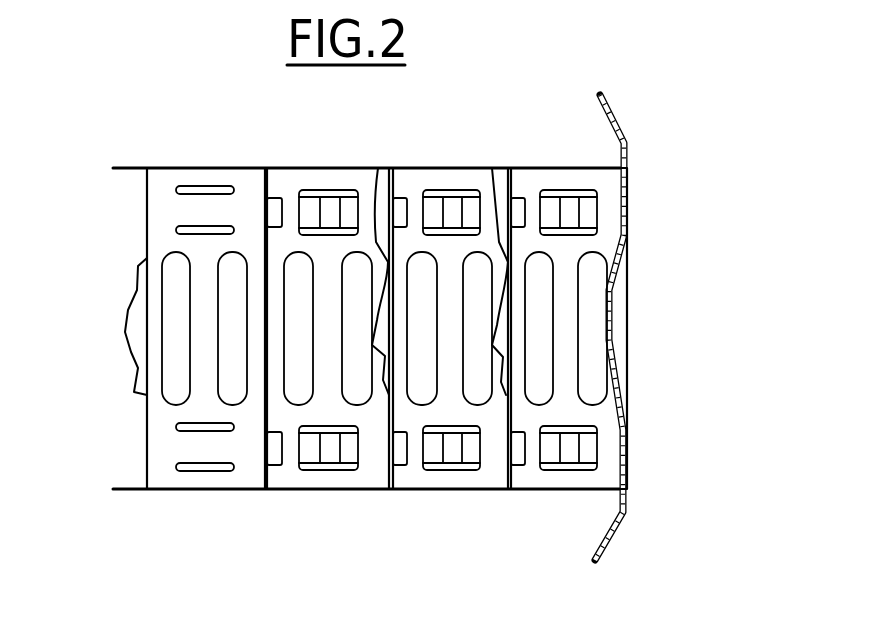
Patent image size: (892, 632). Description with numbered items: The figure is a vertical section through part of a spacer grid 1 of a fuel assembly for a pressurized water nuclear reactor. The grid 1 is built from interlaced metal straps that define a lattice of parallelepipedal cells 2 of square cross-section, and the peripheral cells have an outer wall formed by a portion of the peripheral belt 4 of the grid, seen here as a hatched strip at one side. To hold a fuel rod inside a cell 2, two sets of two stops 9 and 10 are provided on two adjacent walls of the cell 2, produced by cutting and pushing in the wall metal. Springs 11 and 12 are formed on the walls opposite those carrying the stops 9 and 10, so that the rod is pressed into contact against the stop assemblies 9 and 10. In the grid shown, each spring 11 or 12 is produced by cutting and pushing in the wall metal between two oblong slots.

The spacer grid 1 is at (336, 258).
The cells 2 is at (521, 496).
The peripheral belt 4 is at (628, 139).
The stops 9 is at (331, 205).
The stops 10 is at (276, 200).
The spring 11 is at (198, 375).
The spring 12 is at (130, 308).